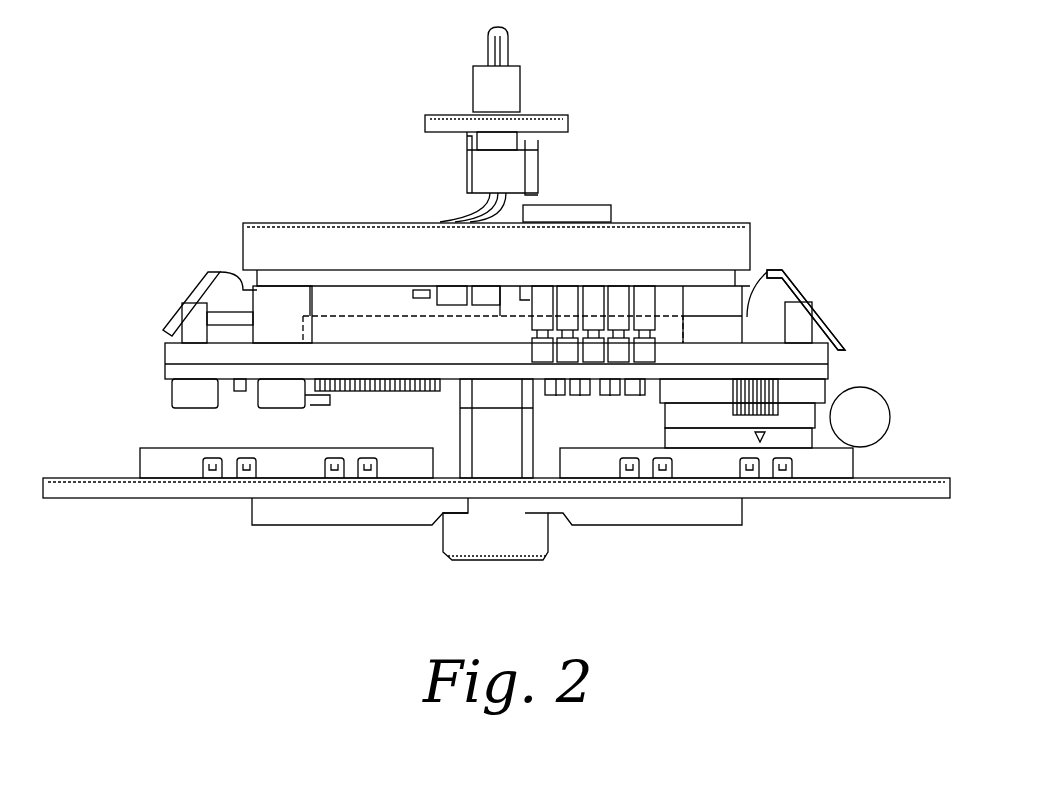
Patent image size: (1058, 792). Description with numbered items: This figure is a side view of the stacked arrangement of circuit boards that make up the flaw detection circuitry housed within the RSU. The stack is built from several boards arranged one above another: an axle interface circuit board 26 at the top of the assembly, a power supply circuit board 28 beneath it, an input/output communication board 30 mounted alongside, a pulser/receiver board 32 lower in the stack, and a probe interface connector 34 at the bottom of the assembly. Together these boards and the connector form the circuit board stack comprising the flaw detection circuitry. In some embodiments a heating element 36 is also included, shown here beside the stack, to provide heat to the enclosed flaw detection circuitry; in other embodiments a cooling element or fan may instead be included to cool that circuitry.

The axle interface circuit board 26 is at (568, 117).
The power supply circuit board 28 is at (255, 222).
The input/output (I/O) communication board 30 is at (813, 307).
The pulser/receiver board 32 is at (325, 527).
The probe interface connector 34 is at (550, 542).
The heating element 36 is at (883, 400).